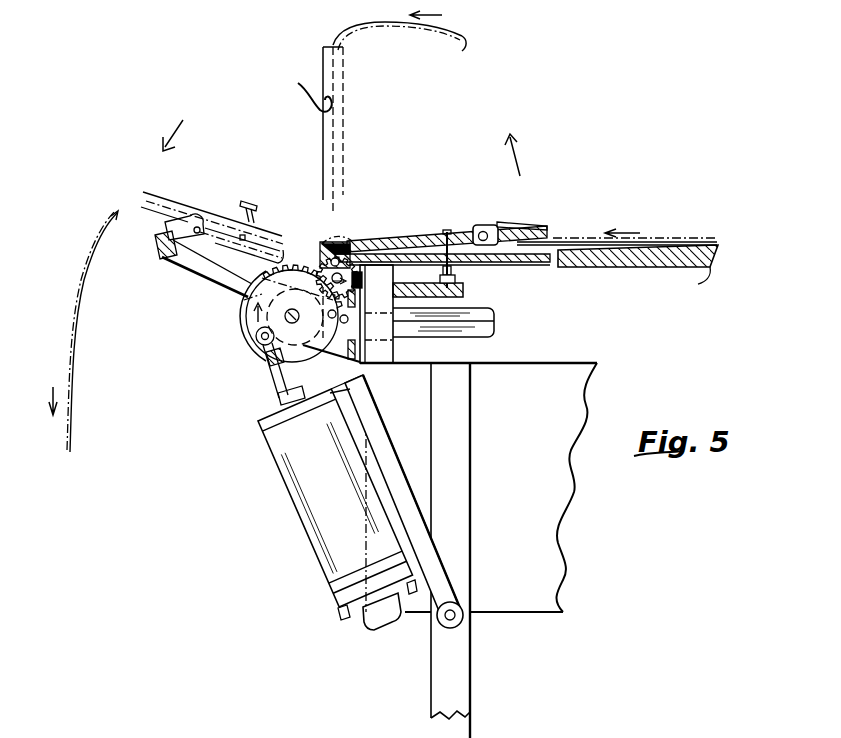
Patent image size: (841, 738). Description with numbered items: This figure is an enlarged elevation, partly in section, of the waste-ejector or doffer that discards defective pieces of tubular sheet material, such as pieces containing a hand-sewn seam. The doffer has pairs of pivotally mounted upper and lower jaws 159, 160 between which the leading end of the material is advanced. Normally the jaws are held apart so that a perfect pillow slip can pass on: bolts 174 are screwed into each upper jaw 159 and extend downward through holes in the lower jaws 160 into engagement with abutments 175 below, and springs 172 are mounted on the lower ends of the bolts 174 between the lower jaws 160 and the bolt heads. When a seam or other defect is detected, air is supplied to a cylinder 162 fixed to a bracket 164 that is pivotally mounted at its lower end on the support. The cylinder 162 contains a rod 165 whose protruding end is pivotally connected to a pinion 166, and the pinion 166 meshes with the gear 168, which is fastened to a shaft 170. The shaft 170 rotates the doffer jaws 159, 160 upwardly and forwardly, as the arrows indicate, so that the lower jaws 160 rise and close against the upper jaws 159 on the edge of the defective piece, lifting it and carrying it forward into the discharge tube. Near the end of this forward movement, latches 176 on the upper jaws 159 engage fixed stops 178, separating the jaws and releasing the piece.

The upper jaws 159 is at (535, 229).
The lower jaws 160 is at (538, 263).
The cylinder 162 is at (293, 466).
The bracket 164 is at (388, 440).
The rod 165 is at (281, 396).
The pinion 166 is at (250, 318).
The gear 168 is at (333, 254).
The shaft 170 is at (350, 250).
The springs 172 is at (452, 276).
The bolts 174 is at (448, 230).
The abutments 175 is at (448, 307).
The latches 176 is at (487, 225).
The fixed stops 178 is at (160, 260).